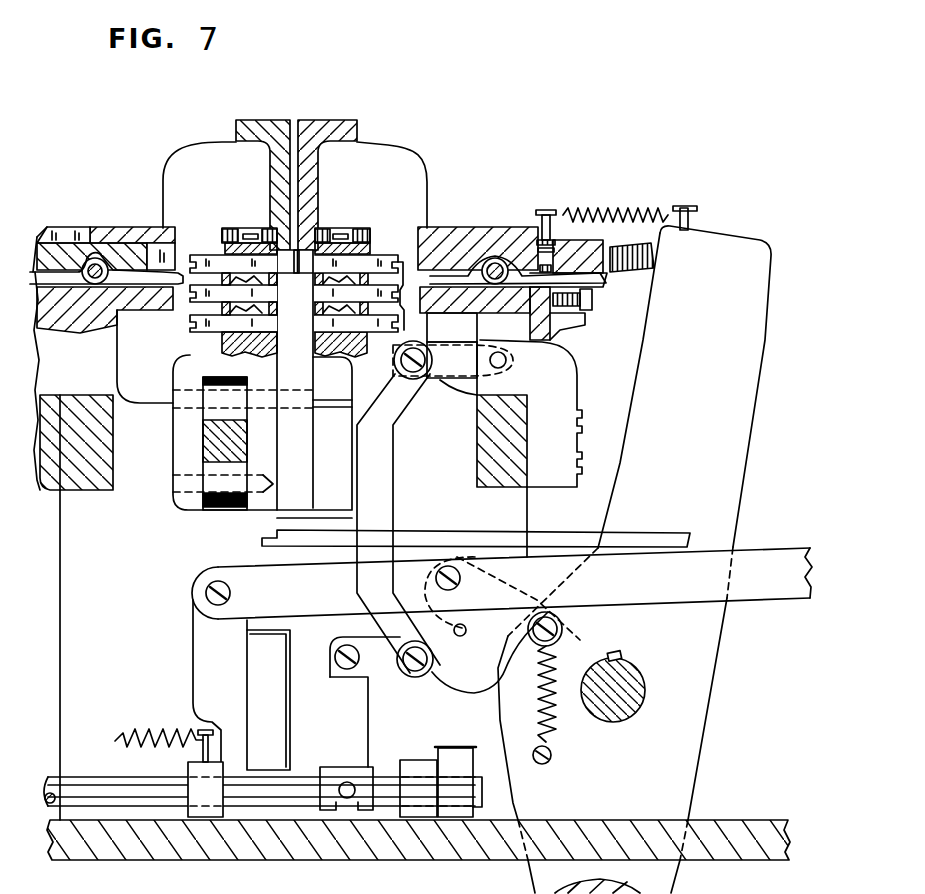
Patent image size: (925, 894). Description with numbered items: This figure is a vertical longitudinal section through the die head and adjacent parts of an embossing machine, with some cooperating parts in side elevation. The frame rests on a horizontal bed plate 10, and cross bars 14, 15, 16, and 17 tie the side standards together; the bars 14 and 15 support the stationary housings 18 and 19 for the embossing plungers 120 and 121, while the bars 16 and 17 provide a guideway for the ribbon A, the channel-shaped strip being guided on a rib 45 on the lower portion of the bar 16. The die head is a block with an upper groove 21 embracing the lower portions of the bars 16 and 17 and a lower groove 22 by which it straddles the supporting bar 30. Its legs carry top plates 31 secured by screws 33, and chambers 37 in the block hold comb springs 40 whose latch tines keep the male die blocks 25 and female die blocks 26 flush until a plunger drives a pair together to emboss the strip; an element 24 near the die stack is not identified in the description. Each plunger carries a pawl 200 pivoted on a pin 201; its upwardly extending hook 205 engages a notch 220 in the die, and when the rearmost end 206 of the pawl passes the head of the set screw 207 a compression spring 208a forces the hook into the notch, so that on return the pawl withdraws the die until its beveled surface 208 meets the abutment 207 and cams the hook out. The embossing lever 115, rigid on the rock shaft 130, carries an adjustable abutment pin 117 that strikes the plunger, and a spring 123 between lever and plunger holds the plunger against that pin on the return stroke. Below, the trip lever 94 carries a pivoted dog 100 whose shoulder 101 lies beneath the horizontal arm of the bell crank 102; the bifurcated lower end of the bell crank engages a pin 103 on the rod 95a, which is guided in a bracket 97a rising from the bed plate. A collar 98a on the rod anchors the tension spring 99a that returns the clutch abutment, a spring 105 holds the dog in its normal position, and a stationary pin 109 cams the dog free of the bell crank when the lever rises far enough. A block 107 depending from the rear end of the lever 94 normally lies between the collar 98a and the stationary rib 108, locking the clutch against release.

The cross bar 16 is at (260, 128).
The cross bar 17 is at (340, 104).
The stationary housing 18 is at (102, 241).
The embossing plunger 120 is at (131, 250).
The clamping nut 24 is at (230, 231).
The top plate 31 is at (268, 242).
The comb spring 40 is at (237, 273).
The die block 25 is at (245, 250).
The chamber 37 is at (237, 268).
The rib 45 is at (297, 258).
The screw 33 is at (340, 233).
The die block 26 is at (378, 262).
The notch 220 is at (395, 262).
The hook 205 is at (408, 255).
The plunger 121 is at (440, 245).
The pawl 200 is at (518, 262).
The pin 201 is at (510, 265).
The compression spring 208a is at (590, 223).
The spring 123 is at (663, 212).
The adjustable abutment pin 117 is at (644, 250).
The rearmost end of the pawl 206 is at (568, 282).
The beveled surface 208 is at (572, 298).
The set screw 207 is at (590, 314).
The embossing lever 115 is at (634, 559).
The stationary housing 19 is at (533, 408).
The cross bar 15 is at (487, 453).
The groove 21 is at (314, 383).
The ribbon A is at (297, 276).
The supporting bar 30 is at (218, 441).
The cross bar 14 is at (90, 483).
The groove 22 is at (215, 511).
The trip lever 94 is at (502, 597).
The locking block 107 is at (206, 655).
The stationary rib 108 is at (268, 700).
The stationary pin 109 is at (467, 629).
The dog 100 is at (423, 509).
The shoulder 101 is at (430, 684).
The bell crank 102 is at (365, 702).
The pin 103 is at (352, 787).
The bracket 97a is at (453, 754).
The collar 98a is at (190, 771).
The tension spring 99a is at (162, 713).
The rod 95a is at (83, 776).
The spring 105 is at (550, 731).
The rock shaft 130 is at (637, 694).
The bed plate 10 is at (457, 847).